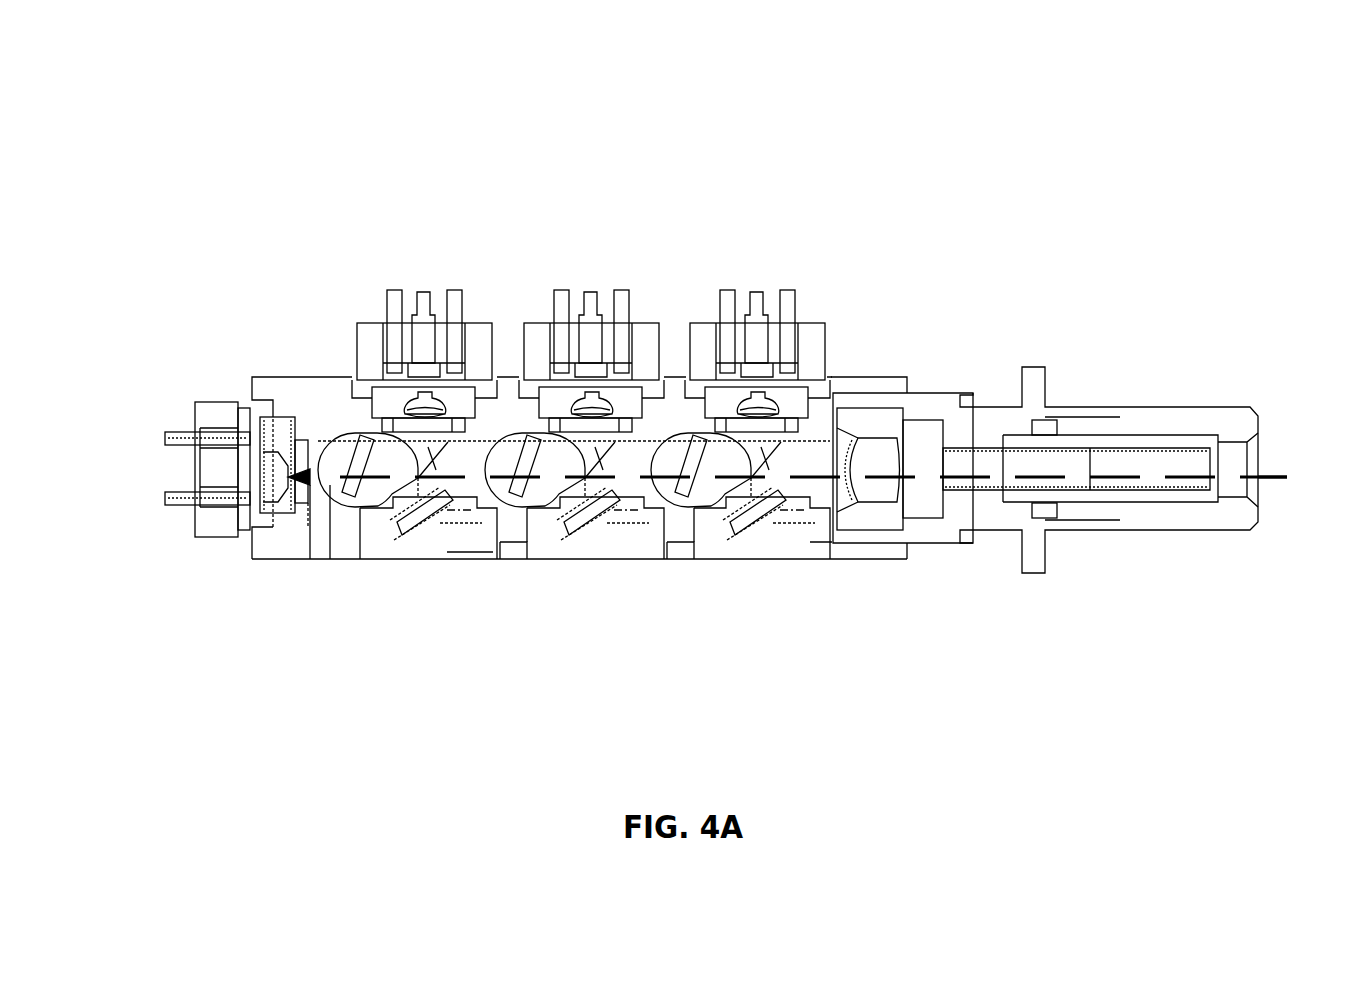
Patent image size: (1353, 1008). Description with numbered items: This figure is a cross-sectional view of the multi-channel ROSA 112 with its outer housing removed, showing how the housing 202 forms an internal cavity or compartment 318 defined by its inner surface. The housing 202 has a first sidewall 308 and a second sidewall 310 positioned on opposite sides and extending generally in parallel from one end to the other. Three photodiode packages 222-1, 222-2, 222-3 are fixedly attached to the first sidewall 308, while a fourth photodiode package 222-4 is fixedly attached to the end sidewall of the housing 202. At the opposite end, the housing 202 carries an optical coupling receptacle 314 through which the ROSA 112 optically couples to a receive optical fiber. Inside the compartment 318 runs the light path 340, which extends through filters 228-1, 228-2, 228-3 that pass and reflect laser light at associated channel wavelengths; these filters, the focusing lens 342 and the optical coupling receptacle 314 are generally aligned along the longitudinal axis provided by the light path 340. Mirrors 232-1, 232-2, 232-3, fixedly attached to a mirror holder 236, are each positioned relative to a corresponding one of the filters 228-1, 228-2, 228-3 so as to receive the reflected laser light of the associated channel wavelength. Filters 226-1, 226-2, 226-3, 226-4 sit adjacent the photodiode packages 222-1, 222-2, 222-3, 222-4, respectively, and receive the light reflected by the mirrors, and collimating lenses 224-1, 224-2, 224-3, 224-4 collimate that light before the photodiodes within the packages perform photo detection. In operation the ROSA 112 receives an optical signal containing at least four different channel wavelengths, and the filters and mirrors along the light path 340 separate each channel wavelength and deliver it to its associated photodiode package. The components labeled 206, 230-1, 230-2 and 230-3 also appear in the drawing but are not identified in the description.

The multi-channel ROSA 112 is at (281, 112).
The housing 202 is at (303, 382).
The housing 206 is at (640, 562).
The photodiode package 222-1 is at (705, 325).
The photodiode package 222-2 is at (537, 325).
The photodiode package 222-3 is at (378, 325).
The photodiode package 222-4 is at (197, 405).
The collimating lens 224-1 is at (758, 397).
The collimating lens 224-2 is at (592, 397).
The collimating lens 224-3 is at (425, 397).
The collimating lens 224-4 is at (272, 472).
The filter 226-1 is at (746, 432).
The filter 226-2 is at (580, 432).
The filter 226-3 is at (413, 432).
The filter 226-4 is at (300, 448).
The filter 228-1 is at (695, 485).
The filter 228-2 is at (529, 485).
The filter 228-3 is at (362, 485).
The chamber 230-1 is at (665, 483).
The chamber 230-2 is at (499, 483).
The chamber 230-3 is at (332, 483).
The mirror 232-1 is at (760, 503).
The mirror 232-2 is at (594, 503).
The mirror 232-3 is at (427, 503).
The mirror holder 236 is at (470, 540).
The first sidewall 308 is at (863, 378).
The second sidewall 310 is at (877, 557).
The optical coupling receptacle 314 is at (1138, 517).
The internal cavity 318 is at (317, 487).
The light path 340 is at (1280, 477).
The focusing lens 342 is at (890, 495).